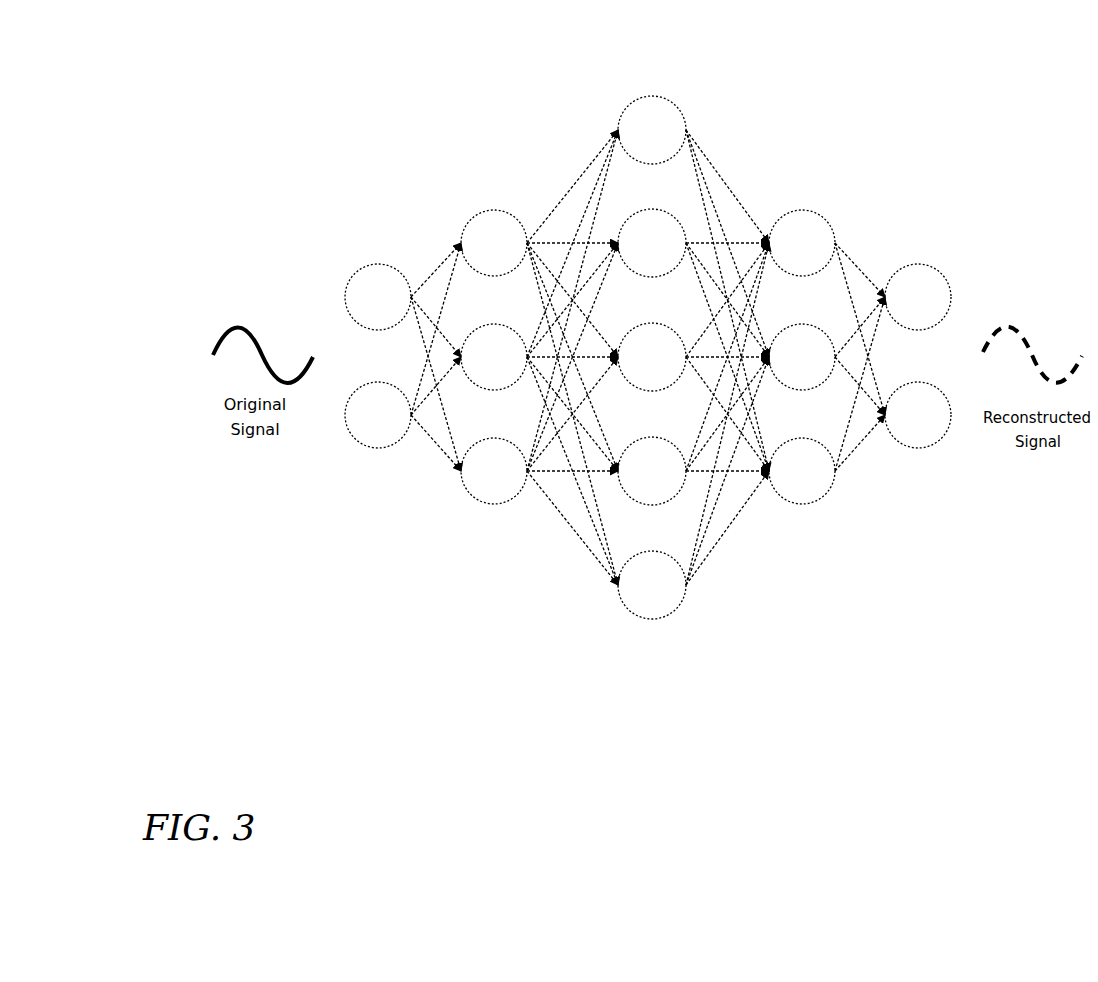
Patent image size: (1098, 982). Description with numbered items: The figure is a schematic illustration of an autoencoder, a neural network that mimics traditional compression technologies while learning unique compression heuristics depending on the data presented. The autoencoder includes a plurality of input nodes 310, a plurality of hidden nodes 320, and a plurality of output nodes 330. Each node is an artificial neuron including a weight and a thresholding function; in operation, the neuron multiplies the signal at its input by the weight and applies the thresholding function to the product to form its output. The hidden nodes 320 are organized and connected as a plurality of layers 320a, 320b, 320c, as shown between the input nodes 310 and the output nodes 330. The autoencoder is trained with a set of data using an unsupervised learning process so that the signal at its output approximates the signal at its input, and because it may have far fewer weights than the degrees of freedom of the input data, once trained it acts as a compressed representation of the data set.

The input nodes 310 is at (330, 697).
The hidden nodes 320 is at (648, 396).
The layer 320a is at (443, 87).
The layer 320b is at (600, 87).
The layer 320c is at (750, 87).
The output nodes 330 is at (867, 697).